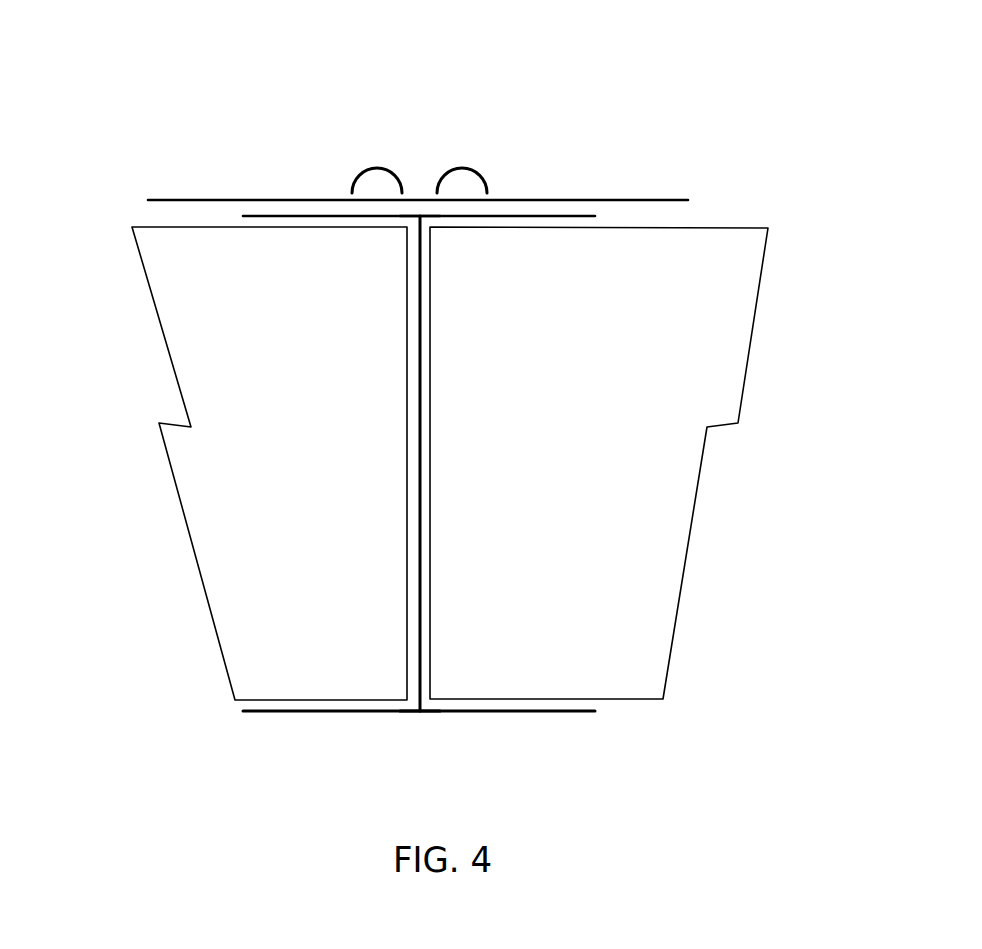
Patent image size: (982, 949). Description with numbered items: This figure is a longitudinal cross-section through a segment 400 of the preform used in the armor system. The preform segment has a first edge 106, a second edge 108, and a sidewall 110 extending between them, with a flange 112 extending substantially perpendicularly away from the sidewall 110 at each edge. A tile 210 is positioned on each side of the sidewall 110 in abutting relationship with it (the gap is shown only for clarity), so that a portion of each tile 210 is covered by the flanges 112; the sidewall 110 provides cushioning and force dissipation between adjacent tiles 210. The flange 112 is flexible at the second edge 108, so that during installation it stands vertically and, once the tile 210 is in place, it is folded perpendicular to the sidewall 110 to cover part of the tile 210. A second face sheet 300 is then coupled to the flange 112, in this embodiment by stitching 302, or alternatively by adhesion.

The segment 400 is at (541, 46).
The second face sheet 300 is at (623, 199).
The stitching 302 is at (377, 167).
The flange 112 is at (273, 214).
The second edge 108 is at (422, 221).
The sidewall 110 is at (431, 536).
The first edge 106 is at (418, 701).
The tile 210 is at (309, 417).